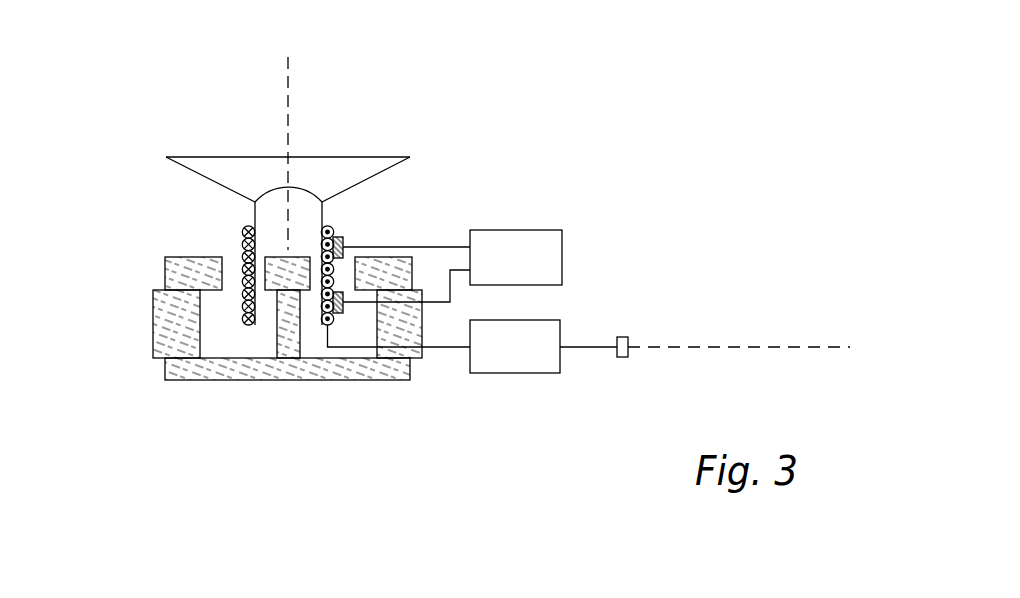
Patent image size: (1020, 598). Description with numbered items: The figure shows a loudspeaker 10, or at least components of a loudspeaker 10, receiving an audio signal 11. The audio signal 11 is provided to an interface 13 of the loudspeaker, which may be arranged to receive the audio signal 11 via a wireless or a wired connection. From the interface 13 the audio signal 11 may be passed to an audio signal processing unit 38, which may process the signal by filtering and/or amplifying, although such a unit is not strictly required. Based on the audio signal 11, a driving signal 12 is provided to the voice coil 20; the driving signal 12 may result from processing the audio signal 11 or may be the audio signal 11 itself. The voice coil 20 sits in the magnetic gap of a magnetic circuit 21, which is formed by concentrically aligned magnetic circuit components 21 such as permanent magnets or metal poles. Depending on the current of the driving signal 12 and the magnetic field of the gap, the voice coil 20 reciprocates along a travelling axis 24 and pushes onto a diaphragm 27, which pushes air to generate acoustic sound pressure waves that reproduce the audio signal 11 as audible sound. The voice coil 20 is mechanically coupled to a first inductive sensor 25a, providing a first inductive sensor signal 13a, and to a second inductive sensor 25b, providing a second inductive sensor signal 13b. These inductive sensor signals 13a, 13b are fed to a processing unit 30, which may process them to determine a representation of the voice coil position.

The loudspeaker 10 is at (622, 102).
The audio signal 11 is at (730, 347).
The driving signal 12 is at (442, 370).
The interface 13 is at (622, 337).
The first inductive sensor signal 13a is at (449, 247).
The second inductive sensor signal 13b is at (450, 292).
The voice coil 20 is at (247, 248).
The magnetic circuit 21 is at (165, 275).
The travelling axis 24 is at (285, 107).
The first inductive sensor 25a is at (343, 241).
The second inductive sensor 25b is at (340, 313).
The diaphragm 27 is at (218, 157).
The processing unit 30 is at (516, 257).
The audio signal processing unit 38 is at (515, 346).